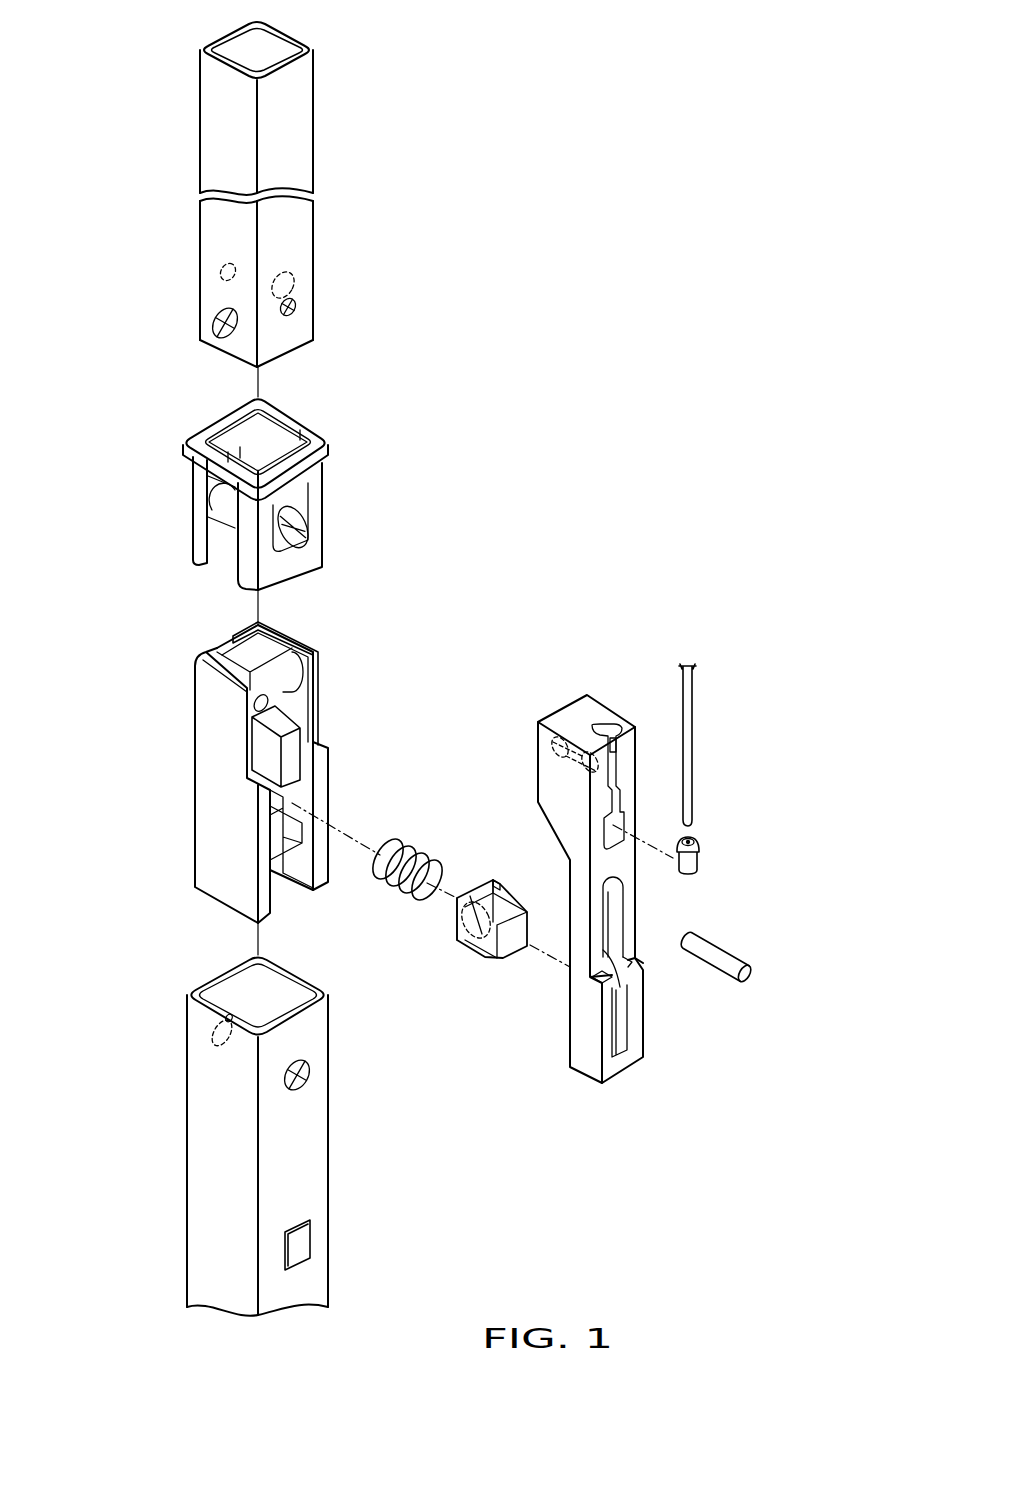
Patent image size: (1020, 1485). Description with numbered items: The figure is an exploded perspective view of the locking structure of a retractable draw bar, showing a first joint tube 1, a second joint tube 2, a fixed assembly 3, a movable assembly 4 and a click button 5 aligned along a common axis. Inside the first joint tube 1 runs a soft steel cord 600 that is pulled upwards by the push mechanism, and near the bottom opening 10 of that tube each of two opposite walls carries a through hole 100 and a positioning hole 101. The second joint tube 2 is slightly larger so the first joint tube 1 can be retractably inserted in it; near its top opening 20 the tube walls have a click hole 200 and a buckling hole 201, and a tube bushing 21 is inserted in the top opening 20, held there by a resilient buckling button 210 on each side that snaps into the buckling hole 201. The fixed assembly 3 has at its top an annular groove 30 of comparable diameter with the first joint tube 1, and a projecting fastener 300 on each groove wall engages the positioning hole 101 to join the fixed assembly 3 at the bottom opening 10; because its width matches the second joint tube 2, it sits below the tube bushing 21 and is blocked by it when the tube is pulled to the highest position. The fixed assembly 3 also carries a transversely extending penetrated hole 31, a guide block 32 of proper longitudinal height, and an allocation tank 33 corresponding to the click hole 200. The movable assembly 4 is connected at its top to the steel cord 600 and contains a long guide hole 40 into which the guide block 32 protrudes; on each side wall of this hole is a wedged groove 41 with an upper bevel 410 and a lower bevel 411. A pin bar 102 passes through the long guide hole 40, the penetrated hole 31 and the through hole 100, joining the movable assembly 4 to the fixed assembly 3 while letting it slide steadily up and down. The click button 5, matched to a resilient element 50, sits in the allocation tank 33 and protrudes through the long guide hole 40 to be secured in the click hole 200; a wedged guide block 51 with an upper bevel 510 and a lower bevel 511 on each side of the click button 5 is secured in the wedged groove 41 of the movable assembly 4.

The first joint tube 1 is at (223, 148).
The bottom opening 10 is at (292, 358).
The through hole 100 is at (295, 318).
The positioning hole 101 is at (225, 338).
The second joint tube 2 is at (202, 1135).
The top opening 20 is at (292, 988).
The click hole 200 is at (300, 1245).
The buckling hole 201 is at (298, 1073).
The tube bushing 21 is at (313, 440).
The resilient buckling button 210 is at (307, 515).
The fixed assembly 3 is at (205, 781).
The annular groove 30 is at (273, 641).
The projecting fastener 300 is at (292, 673).
The penetrated hole 31 is at (268, 705).
The guide block 32 is at (292, 762).
The allocation tank 33 is at (297, 793).
The movable assembly 4 is at (573, 713).
The long guide hole 40 is at (615, 897).
The wedged groove 41 is at (613, 960).
The upper bevel 410 is at (615, 967).
The lower bevel 411 is at (617, 977).
The click button 5 is at (523, 958).
The resilient element 50 is at (418, 842).
The wedged guide block 51 is at (452, 933).
The upper bevel 510 is at (475, 890).
The lower bevel 511 is at (477, 947).
The steel cord 600 is at (690, 740).
The pin bar 102 is at (722, 967).